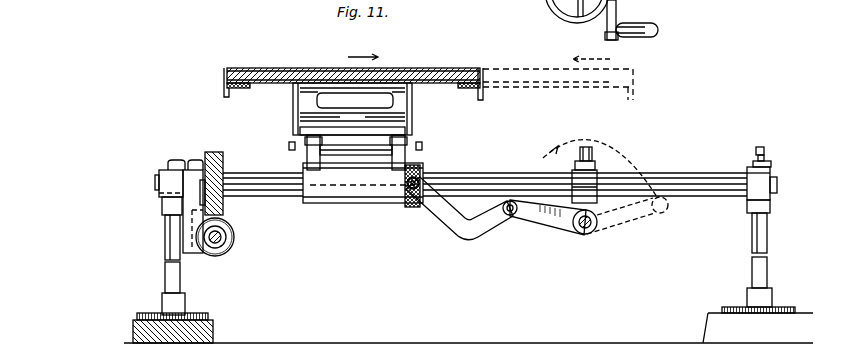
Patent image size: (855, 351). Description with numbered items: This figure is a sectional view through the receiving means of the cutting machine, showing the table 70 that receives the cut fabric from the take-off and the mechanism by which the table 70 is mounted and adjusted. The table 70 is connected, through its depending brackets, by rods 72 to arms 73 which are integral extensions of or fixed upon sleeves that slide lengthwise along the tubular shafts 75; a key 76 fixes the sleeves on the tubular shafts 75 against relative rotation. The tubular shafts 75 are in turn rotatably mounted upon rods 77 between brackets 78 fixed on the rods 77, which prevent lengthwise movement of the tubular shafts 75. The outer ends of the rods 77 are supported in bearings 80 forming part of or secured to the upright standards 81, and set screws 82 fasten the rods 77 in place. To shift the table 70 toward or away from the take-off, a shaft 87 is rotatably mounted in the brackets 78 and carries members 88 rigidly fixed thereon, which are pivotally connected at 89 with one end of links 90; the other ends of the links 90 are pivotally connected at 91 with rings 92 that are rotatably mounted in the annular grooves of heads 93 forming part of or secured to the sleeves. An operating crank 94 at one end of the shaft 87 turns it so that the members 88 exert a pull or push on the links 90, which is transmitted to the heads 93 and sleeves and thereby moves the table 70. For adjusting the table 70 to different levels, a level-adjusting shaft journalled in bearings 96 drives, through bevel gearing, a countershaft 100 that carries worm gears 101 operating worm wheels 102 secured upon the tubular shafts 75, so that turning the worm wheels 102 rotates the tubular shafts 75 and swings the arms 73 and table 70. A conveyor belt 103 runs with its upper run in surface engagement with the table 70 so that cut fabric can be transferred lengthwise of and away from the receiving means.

The table 70 is at (475, 68).
The rods 72 is at (370, 146).
The arms 73 is at (305, 161).
The tubular shafts 75 is at (471, 173).
The key 76 is at (505, 176).
The rods 77 is at (694, 169).
The brackets 78 is at (597, 166).
The bearings 80 is at (165, 172).
The upright standards 81 is at (170, 273).
The set screws 82 is at (766, 153).
The shaft 87 is at (583, 235).
The members 88 is at (545, 226).
The pivotal connection 89 is at (510, 216).
The links 90 is at (460, 224).
The pivotal connection 91 is at (409, 206).
The rings 92 is at (415, 200).
The heads 93 is at (420, 170).
The operating crank 94 is at (614, 16).
The bearings 96 is at (552, 8).
The countershaft 100 is at (221, 242).
The worm gears 101 is at (236, 236).
The worm wheels 102 is at (221, 152).
The conveyor belt 103 is at (282, 68).